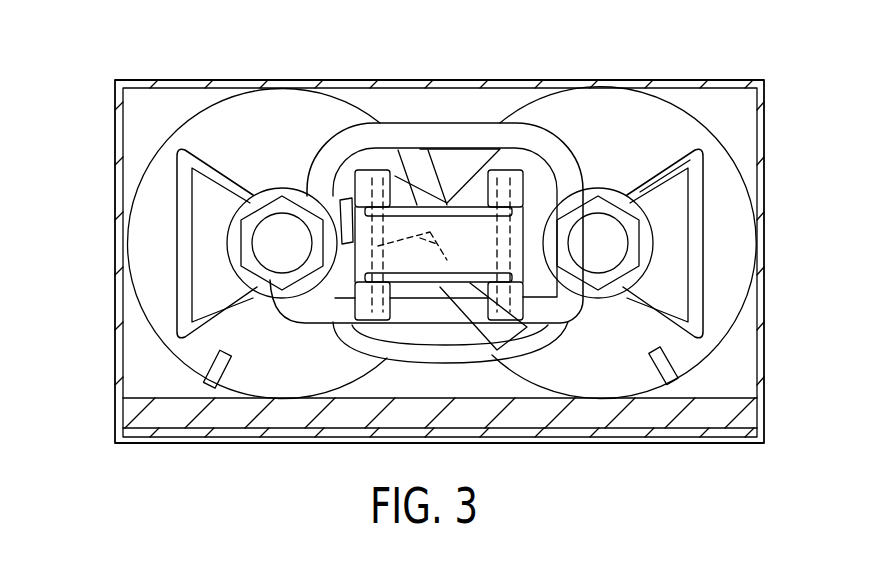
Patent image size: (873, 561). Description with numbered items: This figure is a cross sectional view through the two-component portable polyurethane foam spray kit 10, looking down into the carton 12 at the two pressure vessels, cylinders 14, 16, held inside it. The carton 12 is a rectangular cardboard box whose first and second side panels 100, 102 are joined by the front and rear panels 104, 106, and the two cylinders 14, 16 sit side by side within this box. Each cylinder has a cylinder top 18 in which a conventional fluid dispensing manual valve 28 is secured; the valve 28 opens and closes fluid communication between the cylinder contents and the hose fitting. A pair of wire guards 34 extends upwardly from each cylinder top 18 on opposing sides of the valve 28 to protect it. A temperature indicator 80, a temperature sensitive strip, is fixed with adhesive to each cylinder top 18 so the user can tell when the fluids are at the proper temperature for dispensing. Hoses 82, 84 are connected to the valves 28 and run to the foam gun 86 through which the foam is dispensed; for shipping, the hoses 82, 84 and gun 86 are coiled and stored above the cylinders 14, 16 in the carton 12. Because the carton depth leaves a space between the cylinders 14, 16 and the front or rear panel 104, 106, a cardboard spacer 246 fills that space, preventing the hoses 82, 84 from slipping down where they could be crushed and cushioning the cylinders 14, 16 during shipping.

The two-component portable polyurethane foam spray kit 10 is at (435, 253).
The carton 12 is at (435, 262).
The cylinder 14 is at (277, 108).
The cylinder 16 is at (594, 103).
The cylinder top 18 is at (145, 213).
The fluid dispensing manual valve 28 is at (258, 290).
The guard 34 is at (700, 190).
The temperature indicator 80 is at (213, 378).
The hose 82 is at (358, 135).
The hose 84 is at (455, 130).
The foam gun 86 is at (405, 128).
The first side panel 100 is at (118, 267).
The second side panel 102 is at (762, 212).
The front panel 104 is at (674, 445).
The rear panel 106 is at (508, 80).
The spacer 246 is at (730, 416).